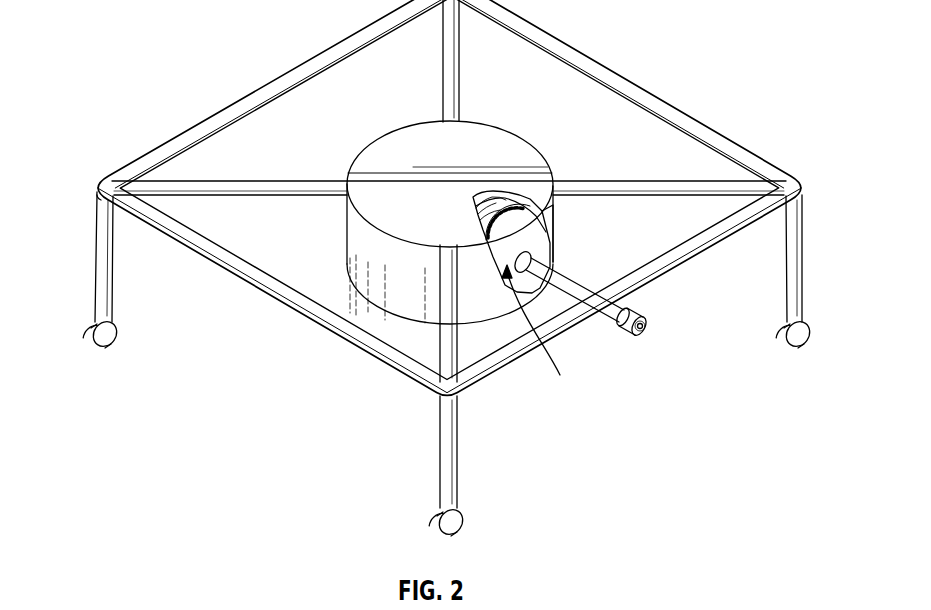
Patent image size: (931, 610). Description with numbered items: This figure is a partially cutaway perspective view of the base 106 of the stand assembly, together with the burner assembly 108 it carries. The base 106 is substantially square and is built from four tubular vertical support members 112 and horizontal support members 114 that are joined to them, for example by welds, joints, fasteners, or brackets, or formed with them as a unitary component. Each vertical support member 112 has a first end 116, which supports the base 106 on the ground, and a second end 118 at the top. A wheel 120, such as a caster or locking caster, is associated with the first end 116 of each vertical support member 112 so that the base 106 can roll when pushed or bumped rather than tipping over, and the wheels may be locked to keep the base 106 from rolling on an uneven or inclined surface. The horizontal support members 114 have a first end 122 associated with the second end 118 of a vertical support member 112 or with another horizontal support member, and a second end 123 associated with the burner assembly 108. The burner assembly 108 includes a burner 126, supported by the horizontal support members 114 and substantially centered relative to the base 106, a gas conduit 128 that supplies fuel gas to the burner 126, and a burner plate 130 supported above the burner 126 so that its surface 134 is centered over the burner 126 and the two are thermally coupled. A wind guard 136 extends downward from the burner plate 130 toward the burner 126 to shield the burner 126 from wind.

The base 106 is at (358, 37).
The burner assembly 108 is at (526, 298).
The vertical support members 112 is at (441, 62).
The horizontal support members 114 is at (250, 100).
The first end 116 is at (113, 320).
The second end 118 is at (115, 178).
The wheel 120 is at (441, 120).
The first end 122 is at (152, 150).
The second end 123 is at (348, 182).
The burner 126 is at (543, 232).
The gas conduit 128 is at (647, 331).
The burner plate 130 is at (530, 143).
The surface 134 is at (372, 150).
The wind guard 136 is at (555, 200).